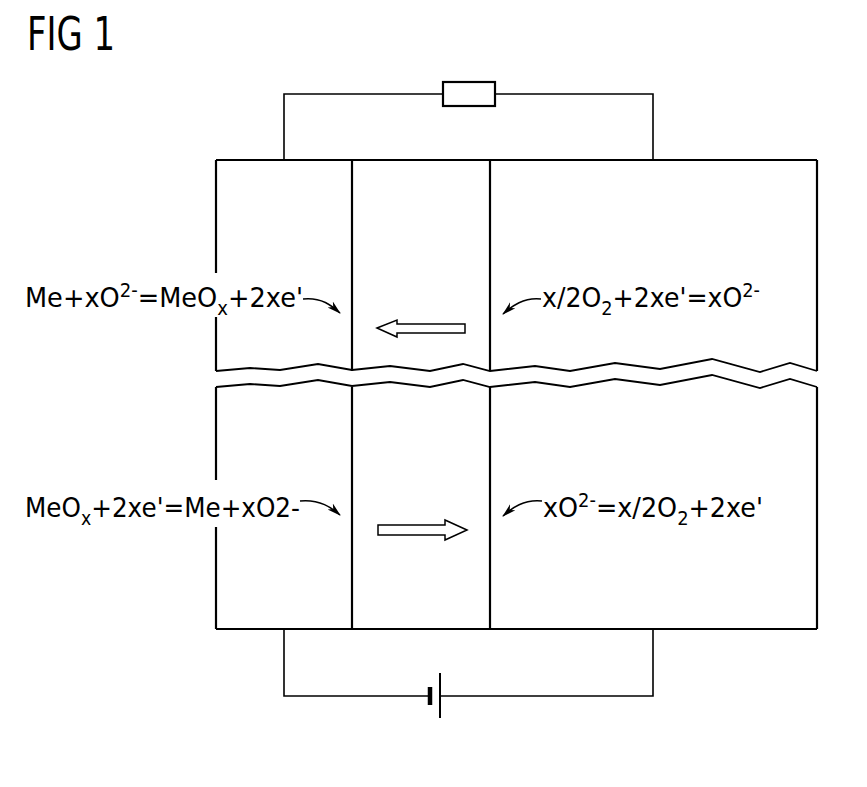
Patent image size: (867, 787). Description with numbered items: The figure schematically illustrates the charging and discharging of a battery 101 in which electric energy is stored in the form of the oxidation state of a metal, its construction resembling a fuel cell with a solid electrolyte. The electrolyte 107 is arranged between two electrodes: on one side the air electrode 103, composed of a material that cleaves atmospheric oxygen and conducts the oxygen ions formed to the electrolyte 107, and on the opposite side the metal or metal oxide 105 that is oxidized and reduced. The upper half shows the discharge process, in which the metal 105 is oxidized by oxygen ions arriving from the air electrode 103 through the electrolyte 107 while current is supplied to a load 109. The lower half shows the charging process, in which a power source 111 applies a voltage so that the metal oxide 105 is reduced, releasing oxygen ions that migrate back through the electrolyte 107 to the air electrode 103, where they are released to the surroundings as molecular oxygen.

The battery 101 is at (765, 143).
The air electrode 103 is at (685, 172).
The metal or metal oxide 105 is at (250, 172).
The electrolyte 107 is at (412, 172).
The load 109 is at (463, 80).
The power source 111 is at (460, 716).